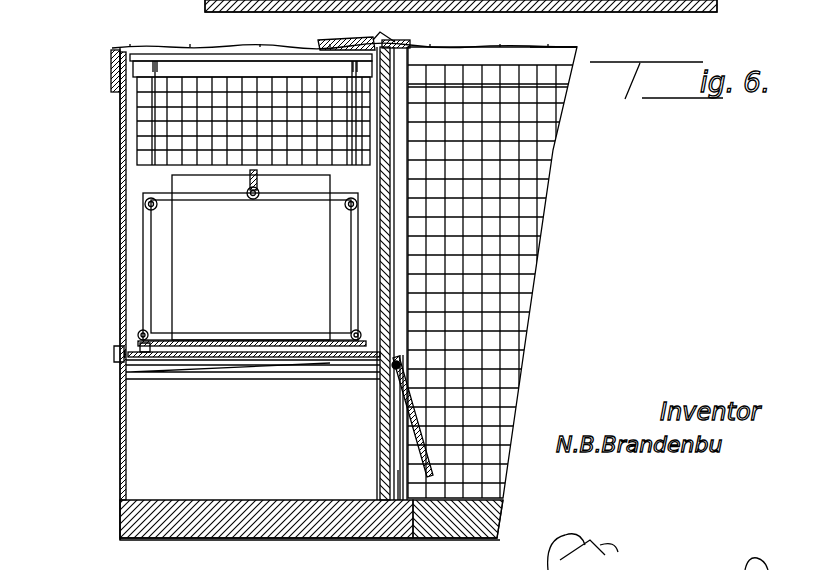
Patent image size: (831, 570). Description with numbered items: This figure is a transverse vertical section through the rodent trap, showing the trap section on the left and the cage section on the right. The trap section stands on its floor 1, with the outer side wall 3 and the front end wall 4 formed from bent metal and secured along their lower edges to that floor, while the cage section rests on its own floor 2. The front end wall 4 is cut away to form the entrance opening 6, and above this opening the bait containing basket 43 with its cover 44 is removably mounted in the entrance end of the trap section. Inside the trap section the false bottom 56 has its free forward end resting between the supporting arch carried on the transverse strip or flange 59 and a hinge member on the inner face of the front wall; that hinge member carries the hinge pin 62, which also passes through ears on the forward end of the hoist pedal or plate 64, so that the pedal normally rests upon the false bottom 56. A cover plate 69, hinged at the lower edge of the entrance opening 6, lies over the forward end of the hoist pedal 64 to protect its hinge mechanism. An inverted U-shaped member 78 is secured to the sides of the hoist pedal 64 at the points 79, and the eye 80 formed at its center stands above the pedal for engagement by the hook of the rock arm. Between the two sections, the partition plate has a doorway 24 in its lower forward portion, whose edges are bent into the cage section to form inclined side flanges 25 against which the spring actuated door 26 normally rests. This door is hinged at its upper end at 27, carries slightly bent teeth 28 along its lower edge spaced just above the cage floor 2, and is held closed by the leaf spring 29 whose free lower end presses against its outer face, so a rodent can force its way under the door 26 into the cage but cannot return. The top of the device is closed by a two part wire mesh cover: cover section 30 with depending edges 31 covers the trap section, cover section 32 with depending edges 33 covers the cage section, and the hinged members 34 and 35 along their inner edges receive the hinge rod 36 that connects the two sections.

The floor of the trap section 1 is at (690, 12).
The floor of the cage section 2 is at (468, 520).
The outer side wall 3 is at (126, 460).
The front end wall 4 is at (173, 412).
The entrance opening 6 is at (175, 259).
The doorway 24 is at (383, 430).
The inclined side flanges 25 is at (405, 481).
The spring actuated door 26 is at (437, 458).
The hinge of the spring actuated door 27 is at (393, 362).
The teeth 28 is at (427, 482).
The leaf spring 29 is at (413, 383).
The cover section 30 is at (212, 42).
The depending edges of cover section 31 is at (116, 78).
The cover section 32 is at (535, 35).
The depending edges of cover section 33 is at (533, 75).
The hinged member 34 is at (403, 33).
The hinged member 35 is at (343, 38).
The hinge rod 36 is at (384, 40).
The bait containing basket 43 is at (180, 146).
The cover of bait basket 44 is at (168, 52).
The false bottom 56 is at (262, 352).
The transverse strip or flange 59 is at (261, 368).
The hinge pin 62 is at (340, 181).
The hoist pedal or plate 64 is at (226, 340).
The cover plate 69 is at (249, 343).
The U-shaped member 78 is at (350, 243).
The securing points of U-shaped member 79 is at (352, 331).
The eye 80 is at (250, 199).